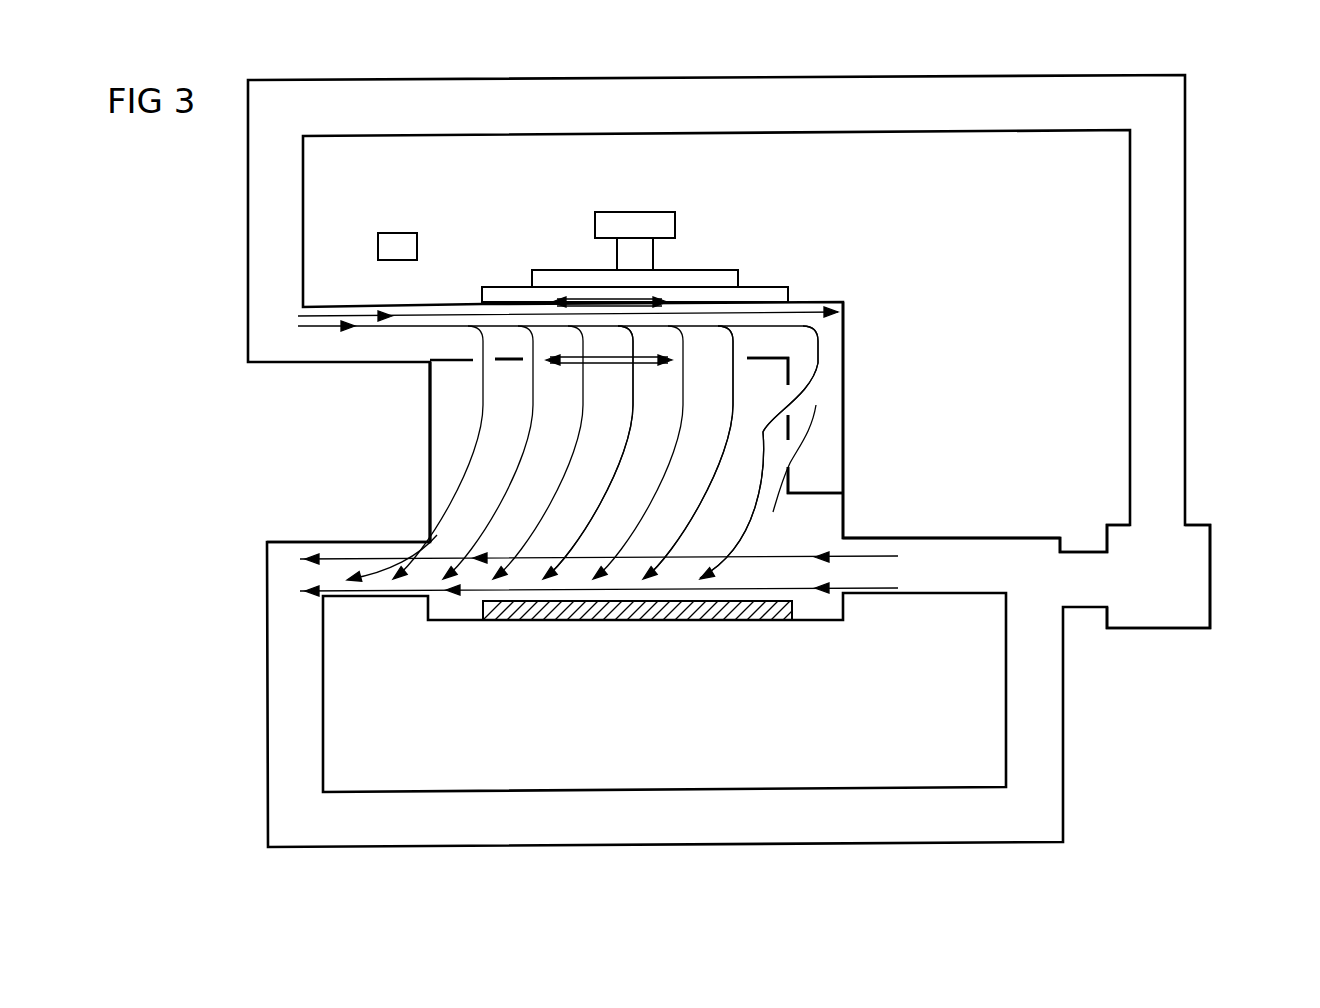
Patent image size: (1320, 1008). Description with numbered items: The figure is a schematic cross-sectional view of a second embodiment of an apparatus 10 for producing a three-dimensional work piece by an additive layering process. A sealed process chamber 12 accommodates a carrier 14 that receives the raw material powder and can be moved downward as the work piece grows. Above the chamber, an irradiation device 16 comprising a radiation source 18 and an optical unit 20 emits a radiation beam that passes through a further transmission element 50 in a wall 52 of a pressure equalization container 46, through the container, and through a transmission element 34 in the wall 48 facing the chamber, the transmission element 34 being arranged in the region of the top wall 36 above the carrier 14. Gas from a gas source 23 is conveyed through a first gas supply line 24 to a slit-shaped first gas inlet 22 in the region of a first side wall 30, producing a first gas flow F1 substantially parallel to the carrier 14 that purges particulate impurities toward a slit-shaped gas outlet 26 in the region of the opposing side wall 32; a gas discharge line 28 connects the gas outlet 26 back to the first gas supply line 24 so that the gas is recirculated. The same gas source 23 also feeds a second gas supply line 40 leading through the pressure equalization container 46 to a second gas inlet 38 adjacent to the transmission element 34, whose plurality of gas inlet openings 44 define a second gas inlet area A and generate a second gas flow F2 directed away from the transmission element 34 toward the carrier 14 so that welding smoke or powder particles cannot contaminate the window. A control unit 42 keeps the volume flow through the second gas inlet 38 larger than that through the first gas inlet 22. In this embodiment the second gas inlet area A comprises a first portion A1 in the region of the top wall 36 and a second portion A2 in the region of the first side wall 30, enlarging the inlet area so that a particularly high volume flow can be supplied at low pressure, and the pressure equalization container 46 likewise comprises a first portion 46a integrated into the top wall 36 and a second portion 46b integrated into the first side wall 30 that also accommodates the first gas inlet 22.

The apparatus 10 is at (1213, 226).
The process chamber 12 is at (933, 336).
The carrier 14 is at (645, 623).
The irradiation device 16 is at (582, 223).
The radiation source 18 is at (655, 222).
The optical unit 20 is at (617, 256).
The first gas inlet 22 is at (847, 533).
The gas source 23 is at (1195, 588).
The first gas supply line 24 is at (1013, 535).
The gas outlet 26 is at (428, 538).
The gas discharge line 28 is at (265, 667).
The first side wall 30 is at (845, 455).
The side wall 32 is at (428, 462).
The transmission element 34 is at (653, 367).
The top wall 36 is at (848, 322).
The second gas inlet 38 is at (446, 360).
The second gas supply line 40 is at (333, 302).
The control unit 42 is at (418, 246).
The gas inlet openings 44 is at (488, 365).
The pressure equalization container 46 is at (783, 328).
The first portion of the pressure equalization container 46a is at (708, 345).
The second portion of the pressure equalization container 46b is at (822, 342).
The wall of the pressure equalization container 48 is at (553, 368).
The further transmission element 50 is at (658, 300).
The wall of the pressure equalization container 52 is at (757, 287).
The second gas inlet area A is at (613, 368).
The first portion of the second gas inlet area A1 is at (670, 364).
The second portion of the second gas inlet area A2 is at (787, 482).
The first gas flow F1 is at (810, 620).
The second gas flow F2 is at (620, 470).